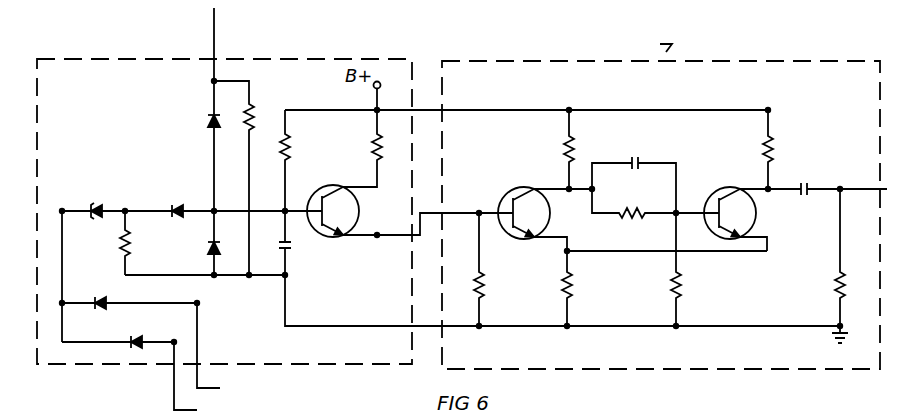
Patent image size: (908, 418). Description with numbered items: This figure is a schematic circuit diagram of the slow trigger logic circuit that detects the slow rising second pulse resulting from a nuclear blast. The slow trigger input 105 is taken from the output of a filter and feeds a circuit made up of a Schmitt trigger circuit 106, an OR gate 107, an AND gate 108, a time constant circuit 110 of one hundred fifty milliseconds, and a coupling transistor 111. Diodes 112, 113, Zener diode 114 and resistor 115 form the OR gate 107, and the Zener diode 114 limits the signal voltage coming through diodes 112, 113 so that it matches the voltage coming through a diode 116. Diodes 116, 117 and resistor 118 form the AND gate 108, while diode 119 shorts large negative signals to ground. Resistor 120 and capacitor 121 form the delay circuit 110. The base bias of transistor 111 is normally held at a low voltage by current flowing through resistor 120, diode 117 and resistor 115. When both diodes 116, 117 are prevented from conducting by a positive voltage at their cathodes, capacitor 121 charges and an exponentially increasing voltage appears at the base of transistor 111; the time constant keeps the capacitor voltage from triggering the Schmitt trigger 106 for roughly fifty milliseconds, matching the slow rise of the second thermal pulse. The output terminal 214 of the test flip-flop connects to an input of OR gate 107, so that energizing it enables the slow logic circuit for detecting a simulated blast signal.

The slow trigger input 105 is at (231, 26).
The Schmitt trigger circuit 106 is at (833, 109).
The OR gate 107 is at (129, 361).
The AND gate 108 is at (193, 169).
The time constant circuit 110 is at (340, 268).
The coupling transistor 111 is at (380, 183).
The diode 112 is at (97, 296).
The diode 113 is at (155, 333).
The Zener diode 114 is at (97, 204).
The resistor 115 is at (131, 250).
The diode 116 is at (206, 122).
The diode 117 is at (178, 204).
The resistor 118 is at (254, 110).
The diode 119 is at (208, 246).
The resistor 120 is at (293, 155).
The capacitor 121 is at (292, 247).
The output terminal 214 is at (230, 353).